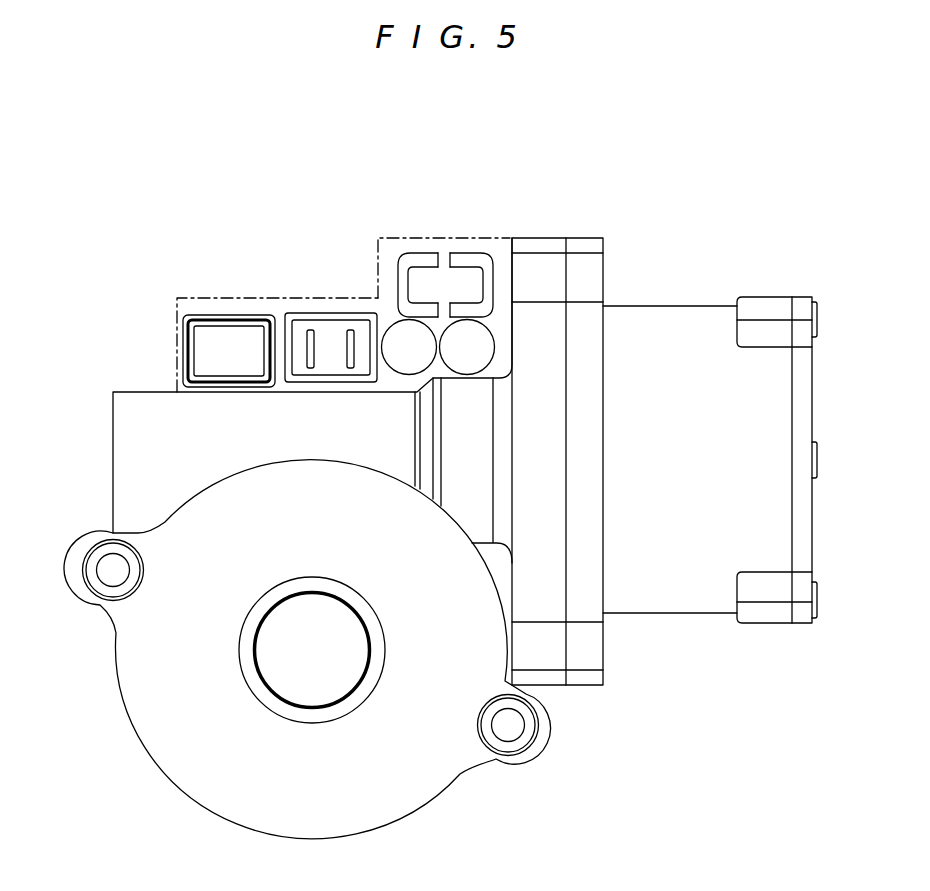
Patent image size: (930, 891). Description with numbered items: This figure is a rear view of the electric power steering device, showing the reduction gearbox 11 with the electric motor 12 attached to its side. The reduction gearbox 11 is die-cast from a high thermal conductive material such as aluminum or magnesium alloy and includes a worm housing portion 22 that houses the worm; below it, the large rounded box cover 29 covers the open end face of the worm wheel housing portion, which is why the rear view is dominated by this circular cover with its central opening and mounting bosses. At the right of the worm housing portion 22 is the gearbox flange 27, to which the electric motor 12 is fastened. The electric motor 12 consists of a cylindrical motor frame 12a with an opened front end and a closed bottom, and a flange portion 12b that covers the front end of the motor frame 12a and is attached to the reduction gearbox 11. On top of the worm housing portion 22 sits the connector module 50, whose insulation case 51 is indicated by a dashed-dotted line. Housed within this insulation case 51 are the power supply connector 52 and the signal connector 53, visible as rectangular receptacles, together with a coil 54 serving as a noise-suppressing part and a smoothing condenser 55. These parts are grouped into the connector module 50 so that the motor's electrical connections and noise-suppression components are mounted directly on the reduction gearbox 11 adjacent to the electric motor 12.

The reduction gearbox 11 is at (458, 785).
The electric motor 12 is at (758, 284).
The motor frame 12a is at (652, 320).
The flange portion 12b is at (583, 242).
The worm housing portion 22 is at (120, 432).
The gearbox flange 27 is at (532, 242).
The box cover 29 is at (153, 717).
The connector module 50 is at (366, 248).
The insulation case 51 is at (176, 308).
The power supply connector 52 is at (328, 327).
The signal connector 53 is at (240, 335).
The coil 54 is at (467, 257).
The smoothing condenser 55 is at (457, 338).